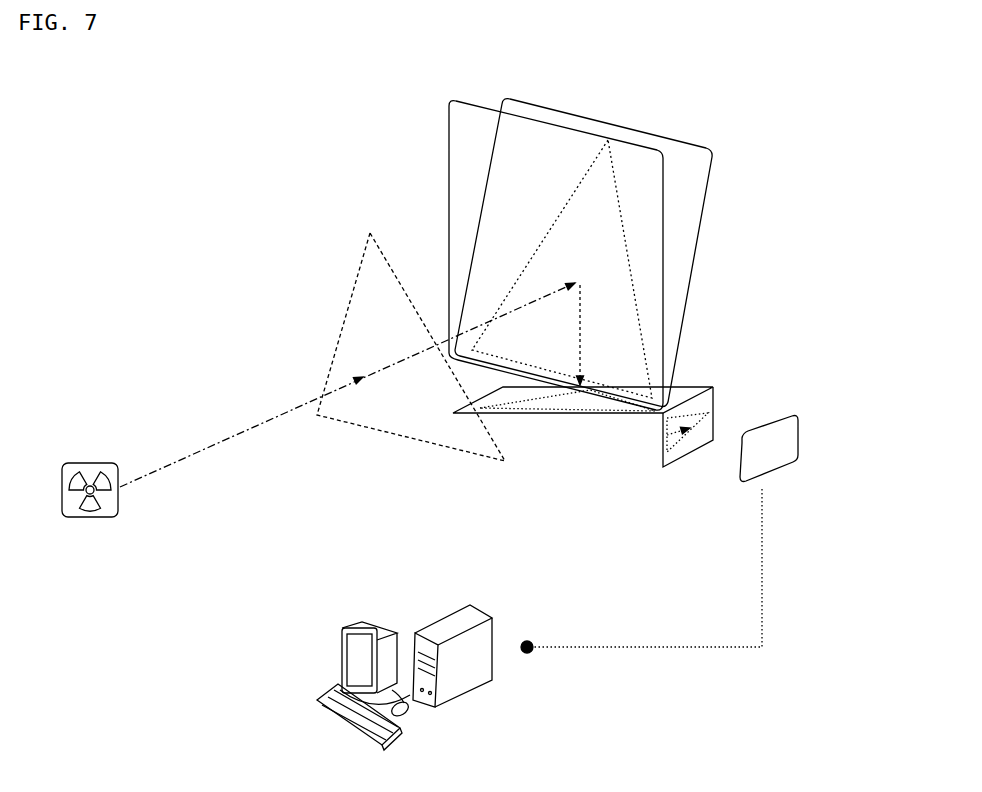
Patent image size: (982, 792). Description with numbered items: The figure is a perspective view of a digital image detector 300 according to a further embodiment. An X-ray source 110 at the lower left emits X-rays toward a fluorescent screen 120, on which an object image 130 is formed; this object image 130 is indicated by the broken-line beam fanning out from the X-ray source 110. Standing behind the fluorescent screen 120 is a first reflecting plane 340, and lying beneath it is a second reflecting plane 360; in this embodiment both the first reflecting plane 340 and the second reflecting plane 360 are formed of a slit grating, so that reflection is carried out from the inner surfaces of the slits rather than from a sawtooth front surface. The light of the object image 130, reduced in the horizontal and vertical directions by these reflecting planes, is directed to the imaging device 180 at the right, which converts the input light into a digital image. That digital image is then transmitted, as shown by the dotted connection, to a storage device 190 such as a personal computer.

The digital image detector 300 is at (832, 100).
The X-ray source 110 is at (103, 516).
The fluorescent screen 120 is at (463, 140).
The object image 130 is at (363, 298).
The imaging device 180 is at (793, 440).
The storage device 190 is at (463, 683).
The first reflecting plane 340 is at (695, 203).
The second reflecting plane 360 is at (578, 417).